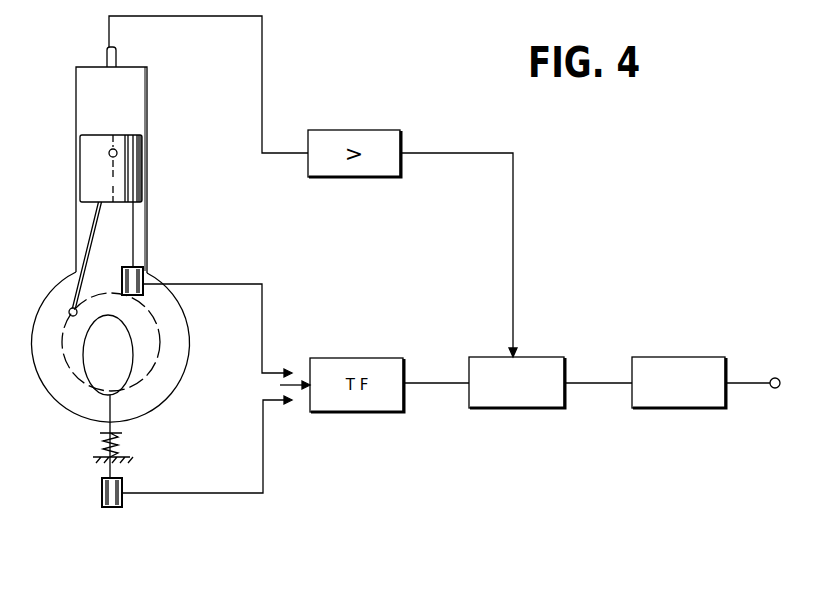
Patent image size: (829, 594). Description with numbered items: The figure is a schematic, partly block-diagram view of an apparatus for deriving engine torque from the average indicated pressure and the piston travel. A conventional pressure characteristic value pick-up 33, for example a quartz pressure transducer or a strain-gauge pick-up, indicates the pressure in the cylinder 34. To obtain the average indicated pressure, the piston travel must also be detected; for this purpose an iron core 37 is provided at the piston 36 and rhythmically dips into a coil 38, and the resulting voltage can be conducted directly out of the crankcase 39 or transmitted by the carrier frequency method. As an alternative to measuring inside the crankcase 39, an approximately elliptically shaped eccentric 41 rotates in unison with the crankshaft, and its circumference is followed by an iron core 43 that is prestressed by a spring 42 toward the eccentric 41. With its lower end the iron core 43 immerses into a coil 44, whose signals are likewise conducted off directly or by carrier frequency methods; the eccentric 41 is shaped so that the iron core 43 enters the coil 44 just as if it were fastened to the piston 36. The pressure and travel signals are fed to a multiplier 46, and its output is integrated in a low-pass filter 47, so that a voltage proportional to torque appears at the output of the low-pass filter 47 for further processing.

The pressure characteristic value pick-up 33 is at (107, 52).
The cylinder 34 is at (147, 90).
The piston 36 is at (135, 170).
The iron core 37 is at (133, 230).
The coil 38 is at (143, 288).
The crankcase 39 is at (173, 352).
The eccentric 41 is at (95, 373).
The spring 42 is at (108, 446).
The iron core 43 is at (111, 407).
The coil 44 is at (101, 492).
The multiplier 46 is at (527, 408).
The low-pass filter 47 is at (690, 408).